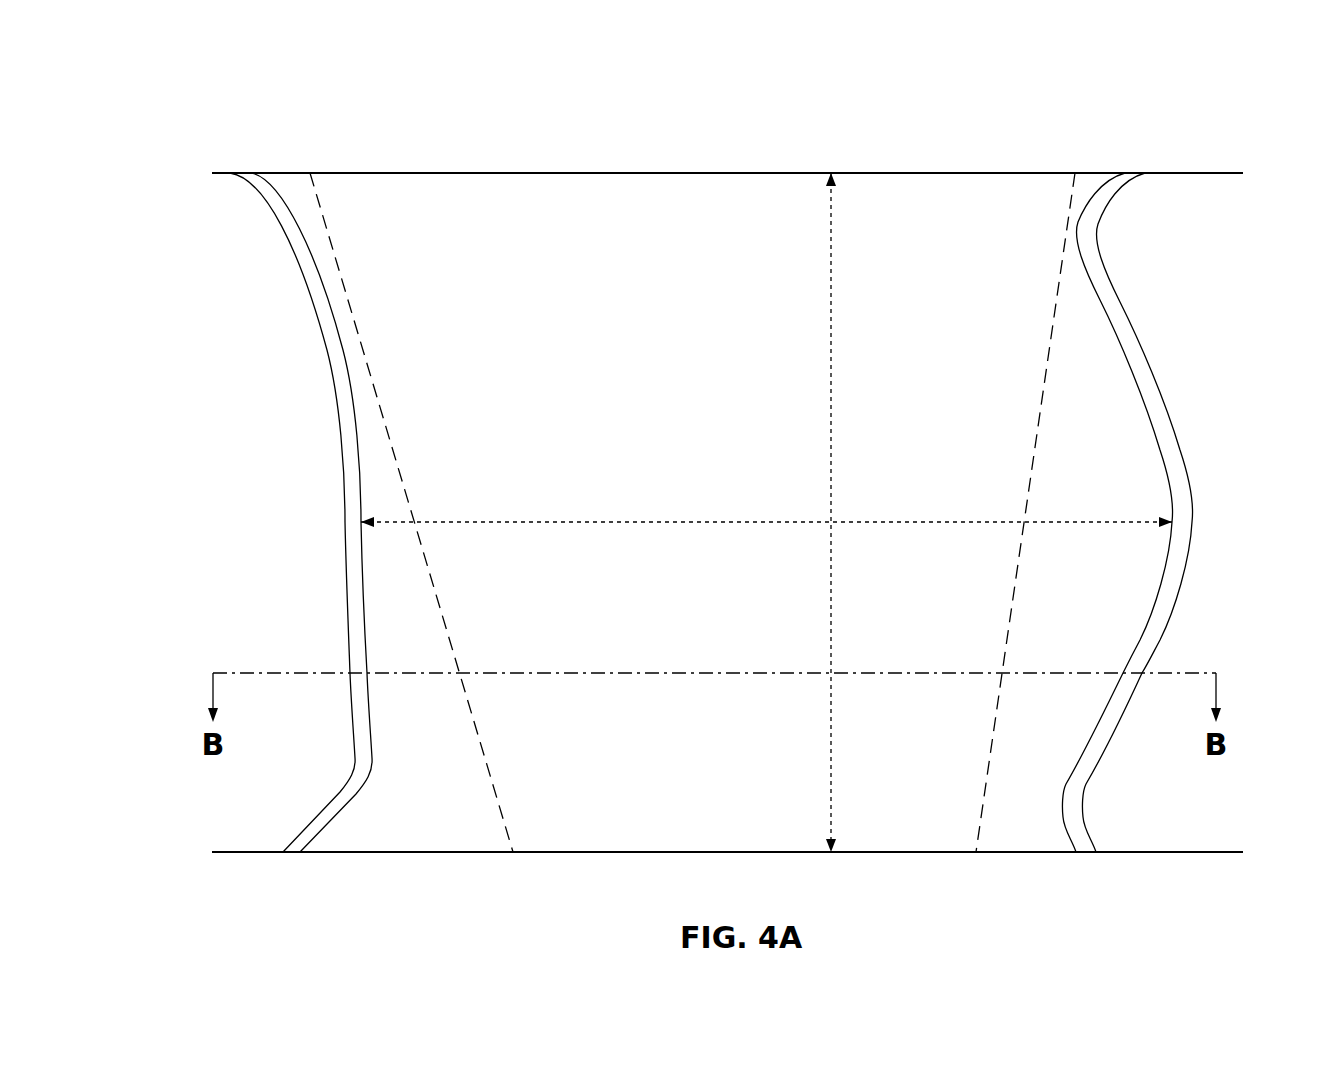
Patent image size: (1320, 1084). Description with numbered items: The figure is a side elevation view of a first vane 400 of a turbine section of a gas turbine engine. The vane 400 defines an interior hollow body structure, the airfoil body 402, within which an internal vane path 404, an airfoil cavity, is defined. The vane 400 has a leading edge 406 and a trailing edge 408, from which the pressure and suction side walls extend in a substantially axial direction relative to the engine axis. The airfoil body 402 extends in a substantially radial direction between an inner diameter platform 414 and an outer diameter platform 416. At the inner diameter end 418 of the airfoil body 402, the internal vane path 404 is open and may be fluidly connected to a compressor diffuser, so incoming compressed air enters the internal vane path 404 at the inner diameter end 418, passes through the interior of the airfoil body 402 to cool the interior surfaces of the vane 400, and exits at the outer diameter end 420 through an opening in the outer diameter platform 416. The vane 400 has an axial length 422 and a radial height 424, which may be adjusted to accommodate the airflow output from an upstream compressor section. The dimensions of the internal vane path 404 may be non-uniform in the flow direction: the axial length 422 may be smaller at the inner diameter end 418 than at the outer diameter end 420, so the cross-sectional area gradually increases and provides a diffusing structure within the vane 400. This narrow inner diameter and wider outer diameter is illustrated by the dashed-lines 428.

The first vane 400 is at (1200, 86).
The airfoil body 402 is at (903, 172).
The internal vane path 404 is at (751, 200).
The leading edge 406 is at (345, 493).
The trailing edge 408 is at (1157, 400).
The inner diameter platform 414 is at (252, 855).
The outer diameter platform 416 is at (285, 173).
The inner diameter end 418 is at (205, 829).
The outer diameter end 420 is at (204, 172).
The axial length 422 is at (935, 522).
The radial height 424 is at (831, 397).
The dashed-lines 428 is at (498, 800).